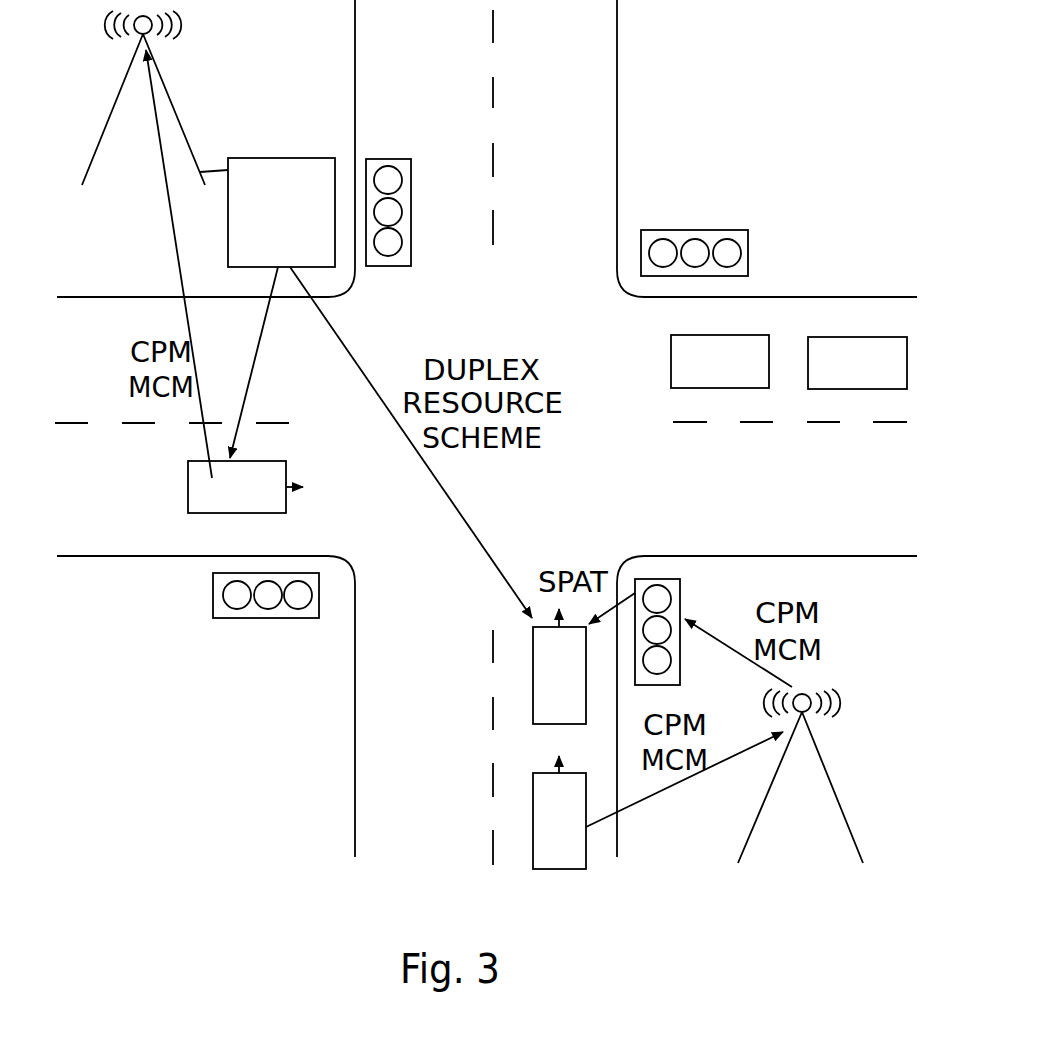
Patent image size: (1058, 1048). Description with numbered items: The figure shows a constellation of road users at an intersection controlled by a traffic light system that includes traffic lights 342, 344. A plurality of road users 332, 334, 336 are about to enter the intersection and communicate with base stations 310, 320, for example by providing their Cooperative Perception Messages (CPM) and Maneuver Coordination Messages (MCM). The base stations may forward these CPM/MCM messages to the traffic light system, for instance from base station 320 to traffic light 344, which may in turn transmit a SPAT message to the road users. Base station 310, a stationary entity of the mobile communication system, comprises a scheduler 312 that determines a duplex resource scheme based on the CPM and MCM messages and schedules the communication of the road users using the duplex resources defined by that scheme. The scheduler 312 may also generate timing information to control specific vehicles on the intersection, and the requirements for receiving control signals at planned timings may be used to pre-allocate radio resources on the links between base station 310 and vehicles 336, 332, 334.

The base station 310 is at (157, 68).
The scheduler 312 is at (295, 158).
The base station 320 is at (833, 787).
The road user 332 is at (533, 695).
The road user 334 is at (586, 869).
The road user 336 is at (288, 503).
The traffic light 342 is at (270, 618).
The traffic light 344 is at (680, 660).